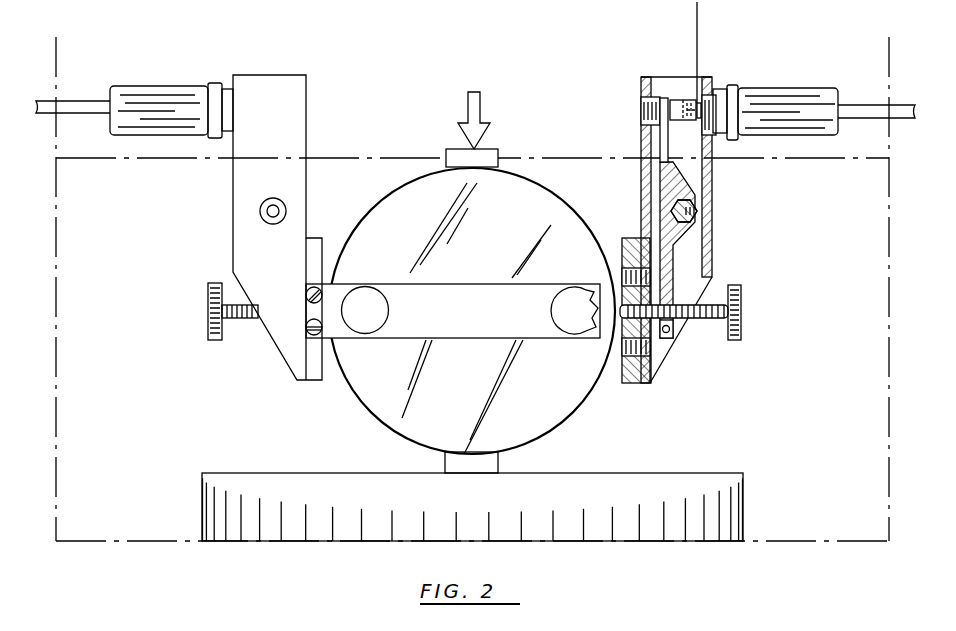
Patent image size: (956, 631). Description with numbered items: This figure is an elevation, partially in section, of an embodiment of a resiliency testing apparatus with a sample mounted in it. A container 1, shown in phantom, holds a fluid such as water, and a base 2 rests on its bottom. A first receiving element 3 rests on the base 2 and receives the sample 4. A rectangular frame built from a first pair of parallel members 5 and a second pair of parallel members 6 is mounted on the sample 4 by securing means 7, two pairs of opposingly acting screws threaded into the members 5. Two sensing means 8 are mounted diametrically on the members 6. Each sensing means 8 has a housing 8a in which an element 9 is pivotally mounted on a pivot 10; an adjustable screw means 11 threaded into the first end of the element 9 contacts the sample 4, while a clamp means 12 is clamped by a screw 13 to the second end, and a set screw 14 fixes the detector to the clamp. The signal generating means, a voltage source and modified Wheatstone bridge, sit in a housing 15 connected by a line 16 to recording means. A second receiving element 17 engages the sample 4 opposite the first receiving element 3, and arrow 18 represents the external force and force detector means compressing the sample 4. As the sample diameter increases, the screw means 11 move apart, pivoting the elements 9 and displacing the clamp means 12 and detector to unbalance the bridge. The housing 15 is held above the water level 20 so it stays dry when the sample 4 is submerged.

The container 1 is at (889, 432).
The base 2 is at (700, 473).
The first receiving element 3 is at (498, 464).
The sample 4 is at (380, 425).
The first pair of parallel members 5 is at (458, 340).
The second pair of parallel members 6 is at (313, 382).
The securing means 7 is at (366, 300).
The sensing means 8 is at (196, 199).
The housing 8a is at (713, 235).
The element 9 is at (675, 265).
The pivot 10 is at (694, 210).
The adjustable screw means 11 is at (742, 312).
The clamp means 12 is at (663, 98).
The screw 13 is at (643, 108).
The set screw 14 is at (686, 100).
The housing 15 is at (773, 88).
The line 16 is at (842, 105).
The second receiving element 17 is at (455, 150).
The arrow 18 is at (482, 102).
The water level 20 is at (378, 155).